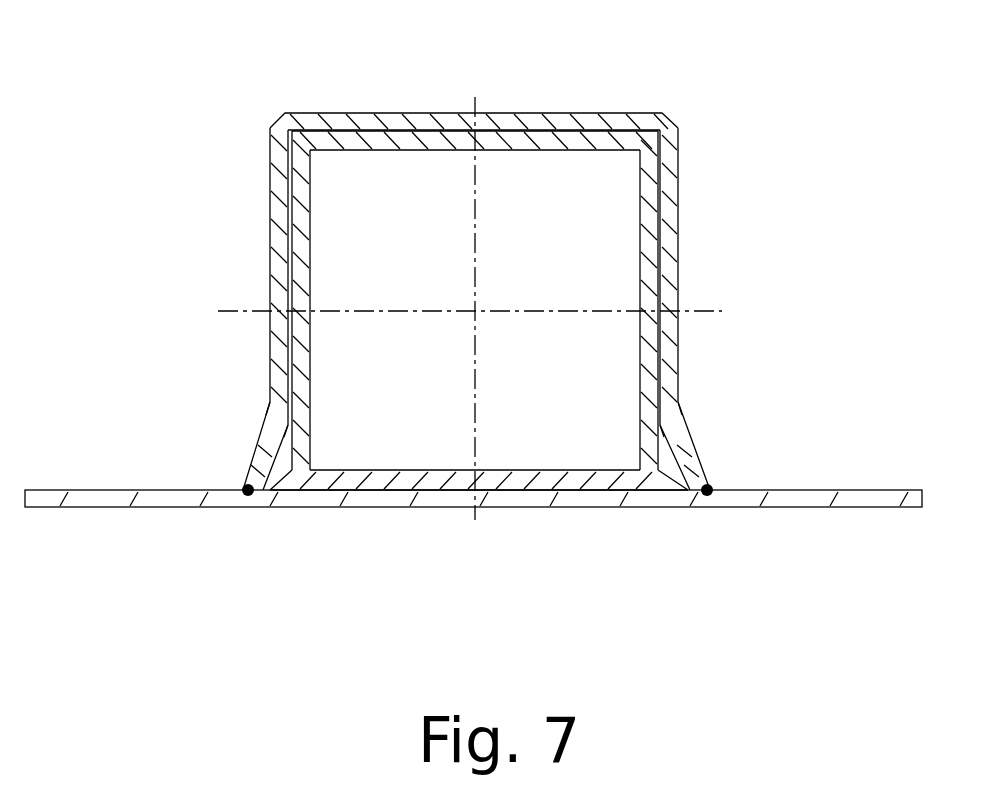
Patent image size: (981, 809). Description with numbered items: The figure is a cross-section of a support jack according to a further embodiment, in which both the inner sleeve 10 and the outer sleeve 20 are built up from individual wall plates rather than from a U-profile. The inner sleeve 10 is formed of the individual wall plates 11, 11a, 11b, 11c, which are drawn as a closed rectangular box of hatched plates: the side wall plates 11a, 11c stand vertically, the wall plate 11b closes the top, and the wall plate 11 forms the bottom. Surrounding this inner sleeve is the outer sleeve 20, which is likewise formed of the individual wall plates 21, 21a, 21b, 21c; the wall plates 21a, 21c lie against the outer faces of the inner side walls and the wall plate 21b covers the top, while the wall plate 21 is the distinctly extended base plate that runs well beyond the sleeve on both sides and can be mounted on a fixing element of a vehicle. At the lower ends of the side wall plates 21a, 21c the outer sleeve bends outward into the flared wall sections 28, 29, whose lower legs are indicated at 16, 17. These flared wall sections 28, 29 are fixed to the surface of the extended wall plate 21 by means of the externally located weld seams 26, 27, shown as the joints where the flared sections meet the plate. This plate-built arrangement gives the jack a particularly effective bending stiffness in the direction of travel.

The outer sleeve 20 is at (692, 157).
The inner sleeve 10 is at (630, 172).
The wall plate 11 is at (530, 477).
The wall plate 11a is at (305, 412).
The wall plate 11b is at (444, 134).
The wall plate 11c is at (650, 330).
The wall plate 21 is at (888, 498).
The wall plate 21a is at (280, 262).
The wall plate 21b is at (506, 113).
The wall plate 21c is at (663, 272).
The left flared leg 16 is at (258, 448).
The right flared leg 17 is at (692, 452).
The flared wall section 28 is at (270, 437).
The flared wall section 29 is at (688, 415).
The weld seam 26 is at (255, 508).
The weld seam 27 is at (700, 508).